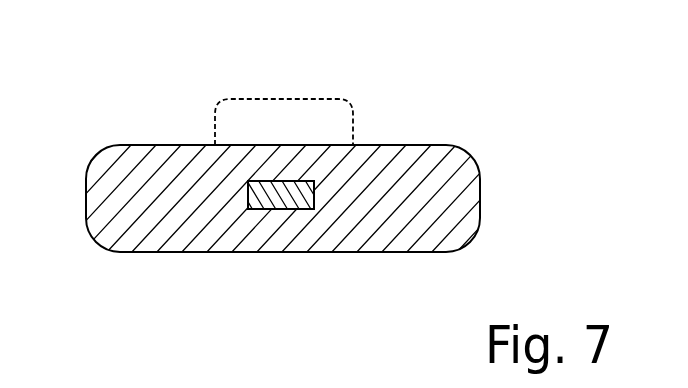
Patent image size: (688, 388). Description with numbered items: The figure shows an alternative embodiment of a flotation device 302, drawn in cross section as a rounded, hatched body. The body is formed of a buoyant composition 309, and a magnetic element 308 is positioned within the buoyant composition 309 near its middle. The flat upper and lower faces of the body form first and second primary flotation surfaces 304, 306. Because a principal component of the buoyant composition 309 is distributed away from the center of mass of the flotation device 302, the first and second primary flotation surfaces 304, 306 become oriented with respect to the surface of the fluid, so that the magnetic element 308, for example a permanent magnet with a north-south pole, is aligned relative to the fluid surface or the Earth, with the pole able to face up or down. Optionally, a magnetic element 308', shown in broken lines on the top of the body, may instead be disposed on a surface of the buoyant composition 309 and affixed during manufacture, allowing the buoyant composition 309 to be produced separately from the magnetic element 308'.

The flotation device 302 is at (398, 80).
The first primary flotation surface 304 is at (162, 252).
The second primary flotation surface 306 is at (118, 145).
The magnetic element 308 is at (284, 251).
The magnetic element 308' is at (243, 87).
The buoyant composition 309 is at (357, 252).